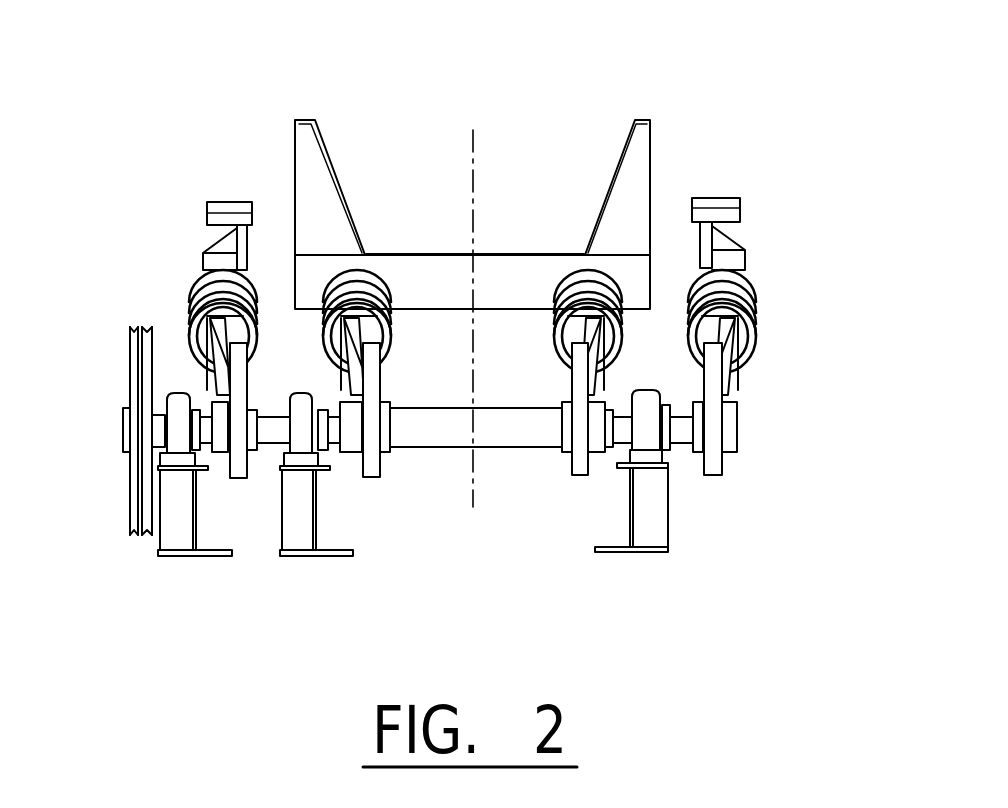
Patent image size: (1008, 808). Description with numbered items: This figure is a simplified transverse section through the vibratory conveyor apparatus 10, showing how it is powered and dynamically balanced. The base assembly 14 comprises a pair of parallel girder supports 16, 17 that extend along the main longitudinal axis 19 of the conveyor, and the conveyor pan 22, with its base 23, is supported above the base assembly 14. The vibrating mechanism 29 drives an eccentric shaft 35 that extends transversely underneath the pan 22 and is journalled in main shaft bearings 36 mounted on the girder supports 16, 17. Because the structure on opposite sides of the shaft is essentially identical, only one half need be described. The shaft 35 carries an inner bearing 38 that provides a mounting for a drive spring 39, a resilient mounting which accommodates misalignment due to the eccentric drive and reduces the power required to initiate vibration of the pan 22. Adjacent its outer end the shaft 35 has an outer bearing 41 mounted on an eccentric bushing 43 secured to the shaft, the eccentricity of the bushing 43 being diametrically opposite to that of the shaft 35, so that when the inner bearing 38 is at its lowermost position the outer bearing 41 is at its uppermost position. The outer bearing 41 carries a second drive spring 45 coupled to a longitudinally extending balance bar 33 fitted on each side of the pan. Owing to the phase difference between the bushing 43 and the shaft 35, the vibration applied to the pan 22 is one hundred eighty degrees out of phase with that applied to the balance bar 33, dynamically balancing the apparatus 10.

The apparatus 10 is at (752, 110).
The base assembly 14 is at (319, 581).
The girder support 16 is at (333, 557).
The girder support 17 is at (655, 552).
The main longitudinal axis 19 is at (470, 207).
The conveyor pan 22 is at (527, 100).
The base of the pan 23 is at (495, 254).
The vibrating mechanism 29 is at (121, 361).
The balance bar 33 is at (233, 203).
The eccentric shaft 35 is at (510, 438).
The main shaft bearing 36 is at (300, 393).
The inner bearing 38 is at (563, 408).
The drive spring 39 is at (585, 270).
The outer bearing 41 is at (715, 470).
The eccentric bushing 43 is at (735, 430).
The drive spring 45 is at (757, 305).